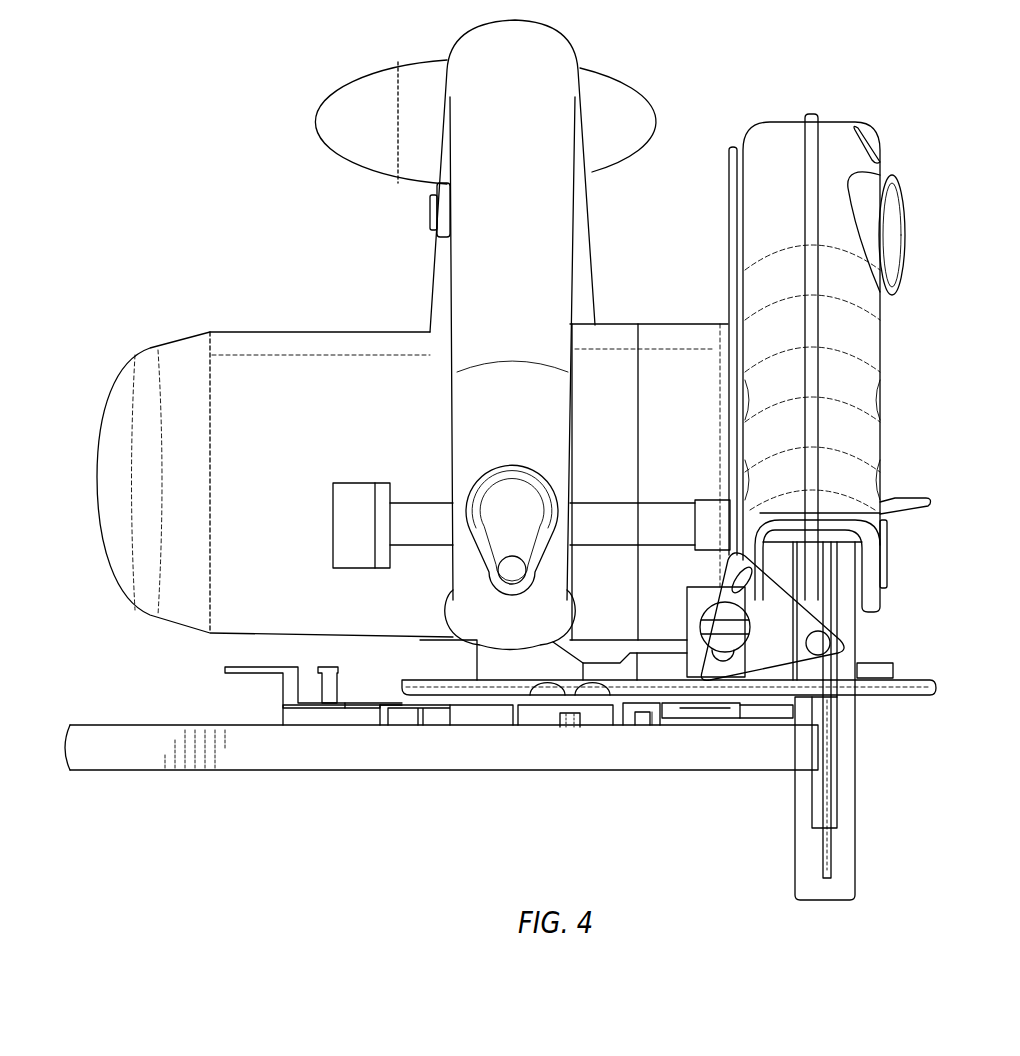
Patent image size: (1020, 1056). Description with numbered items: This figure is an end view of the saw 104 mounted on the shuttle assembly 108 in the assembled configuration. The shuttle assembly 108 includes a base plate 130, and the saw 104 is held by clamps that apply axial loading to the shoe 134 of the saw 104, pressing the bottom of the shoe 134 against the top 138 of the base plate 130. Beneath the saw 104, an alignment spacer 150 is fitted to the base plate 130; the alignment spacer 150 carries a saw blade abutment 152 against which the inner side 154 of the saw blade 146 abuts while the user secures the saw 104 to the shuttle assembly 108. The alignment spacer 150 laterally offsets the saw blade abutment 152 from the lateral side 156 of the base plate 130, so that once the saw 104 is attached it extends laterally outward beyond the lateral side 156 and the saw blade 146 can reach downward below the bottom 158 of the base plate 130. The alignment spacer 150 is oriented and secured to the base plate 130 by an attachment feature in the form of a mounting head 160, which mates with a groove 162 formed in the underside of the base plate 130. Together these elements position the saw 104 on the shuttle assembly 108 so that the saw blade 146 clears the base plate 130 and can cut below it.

The saw 104 is at (537, 90).
The shuttle assembly 108 is at (212, 703).
The base plate 130 is at (452, 727).
The shoe 134 is at (415, 695).
The top 138 is at (327, 692).
The saw blade 146 is at (832, 787).
The alignment spacer 150 is at (758, 728).
The saw blade abutment 152 is at (829, 742).
The inner side 154 is at (820, 872).
The lateral side 156 is at (770, 703).
The bottom 158 is at (385, 705).
The mounting head 160 is at (642, 722).
The groove 162 is at (650, 720).